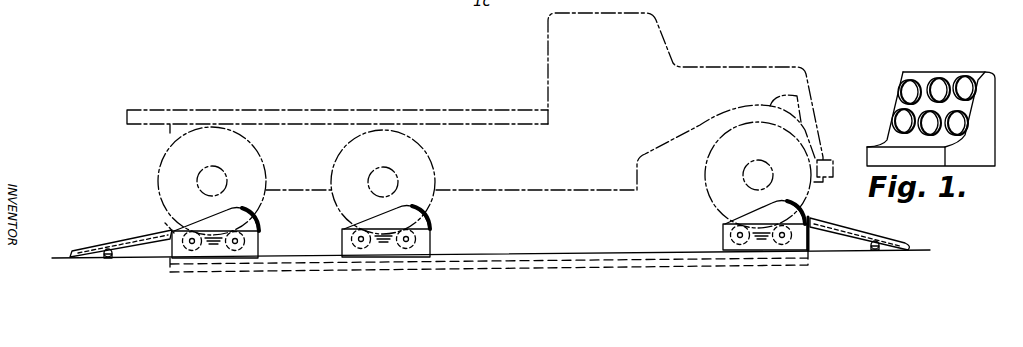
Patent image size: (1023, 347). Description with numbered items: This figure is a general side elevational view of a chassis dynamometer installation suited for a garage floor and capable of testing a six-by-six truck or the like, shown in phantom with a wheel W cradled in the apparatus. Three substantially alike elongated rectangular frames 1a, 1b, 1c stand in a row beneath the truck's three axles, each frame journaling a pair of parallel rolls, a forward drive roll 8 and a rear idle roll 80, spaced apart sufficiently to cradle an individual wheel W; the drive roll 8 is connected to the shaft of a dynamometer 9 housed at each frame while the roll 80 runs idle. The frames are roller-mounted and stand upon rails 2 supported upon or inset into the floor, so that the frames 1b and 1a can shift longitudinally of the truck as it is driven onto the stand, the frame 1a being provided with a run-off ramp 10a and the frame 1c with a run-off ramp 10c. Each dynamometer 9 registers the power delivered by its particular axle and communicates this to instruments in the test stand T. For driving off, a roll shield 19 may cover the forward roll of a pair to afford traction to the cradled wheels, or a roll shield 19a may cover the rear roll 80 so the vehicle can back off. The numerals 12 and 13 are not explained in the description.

The forward frame 1a is at (798, 242).
The middle frame 1b is at (431, 241).
The rear frame 1c is at (258, 240).
The rails 2 is at (560, 262).
The drive roll 8 is at (404, 252).
The idle roll 80 is at (362, 253).
The dynamometer 9 is at (210, 218).
The roll shield 19 is at (252, 229).
The roll shield 19a is at (153, 221).
The run-off ramp 10a is at (875, 232).
The run-off ramp 10c is at (122, 238).
The cross member 12 is at (809, 6).
The platform 13 is at (662, 5).
The wheel W is at (717, 147).
The test stand T is at (897, 104).